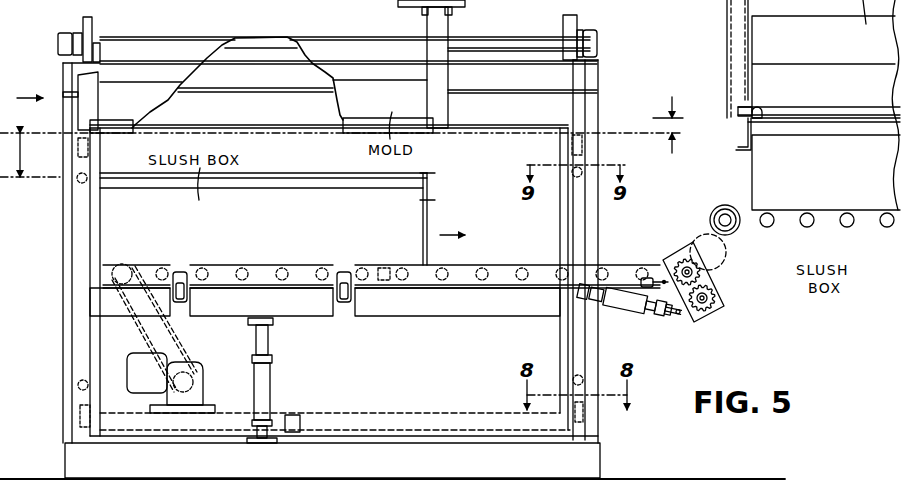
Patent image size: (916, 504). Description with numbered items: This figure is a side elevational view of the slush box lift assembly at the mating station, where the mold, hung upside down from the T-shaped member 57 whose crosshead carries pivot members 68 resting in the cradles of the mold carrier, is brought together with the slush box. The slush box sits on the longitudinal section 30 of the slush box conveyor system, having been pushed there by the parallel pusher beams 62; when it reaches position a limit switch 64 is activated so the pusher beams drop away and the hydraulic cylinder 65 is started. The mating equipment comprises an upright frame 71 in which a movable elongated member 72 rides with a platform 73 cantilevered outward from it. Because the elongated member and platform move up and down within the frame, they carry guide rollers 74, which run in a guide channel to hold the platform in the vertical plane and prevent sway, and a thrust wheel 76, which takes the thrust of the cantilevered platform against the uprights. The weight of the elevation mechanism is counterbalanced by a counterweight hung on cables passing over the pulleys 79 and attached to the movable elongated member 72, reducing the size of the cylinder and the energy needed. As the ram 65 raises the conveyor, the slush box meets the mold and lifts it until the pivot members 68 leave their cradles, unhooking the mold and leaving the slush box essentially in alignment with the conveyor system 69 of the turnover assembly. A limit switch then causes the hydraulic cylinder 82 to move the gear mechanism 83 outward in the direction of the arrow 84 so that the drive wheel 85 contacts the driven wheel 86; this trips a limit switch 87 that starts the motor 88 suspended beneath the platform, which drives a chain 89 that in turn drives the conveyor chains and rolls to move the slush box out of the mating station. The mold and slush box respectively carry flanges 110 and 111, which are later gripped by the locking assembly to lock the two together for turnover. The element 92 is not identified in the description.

The longitudinal section of the slush box conveyor system 30 is at (488, 265).
The T-shaped member 57 is at (447, 106).
The pusher beams 62 is at (188, 291).
The limit switch 64 is at (383, 282).
The hydraulic cylinder 65 is at (266, 388).
The pivot members 68 is at (448, 10).
The conveyor system 69 is at (887, 228).
The upright frame 71 is at (68, 291).
The movable elongated member 72 is at (93, 243).
The platform 73 is at (462, 305).
The guide rollers 74 is at (77, 418).
The thrust wheel 76 is at (78, 383).
The pulleys 79 is at (88, 20).
The hydraulic cylinder 82 is at (628, 305).
The gear mechanism 83 is at (708, 312).
The arrow 84 is at (712, 255).
The drive wheel 85 is at (690, 245).
The driven wheel 86 is at (714, 211).
The limit switch 87 is at (660, 307).
The motor 88 is at (128, 363).
The chain 89 is at (172, 338).
The conveyor coupling 92 is at (648, 268).
The flange of the mold 110 is at (745, 118).
The flange of the slush box 111 is at (762, 120).